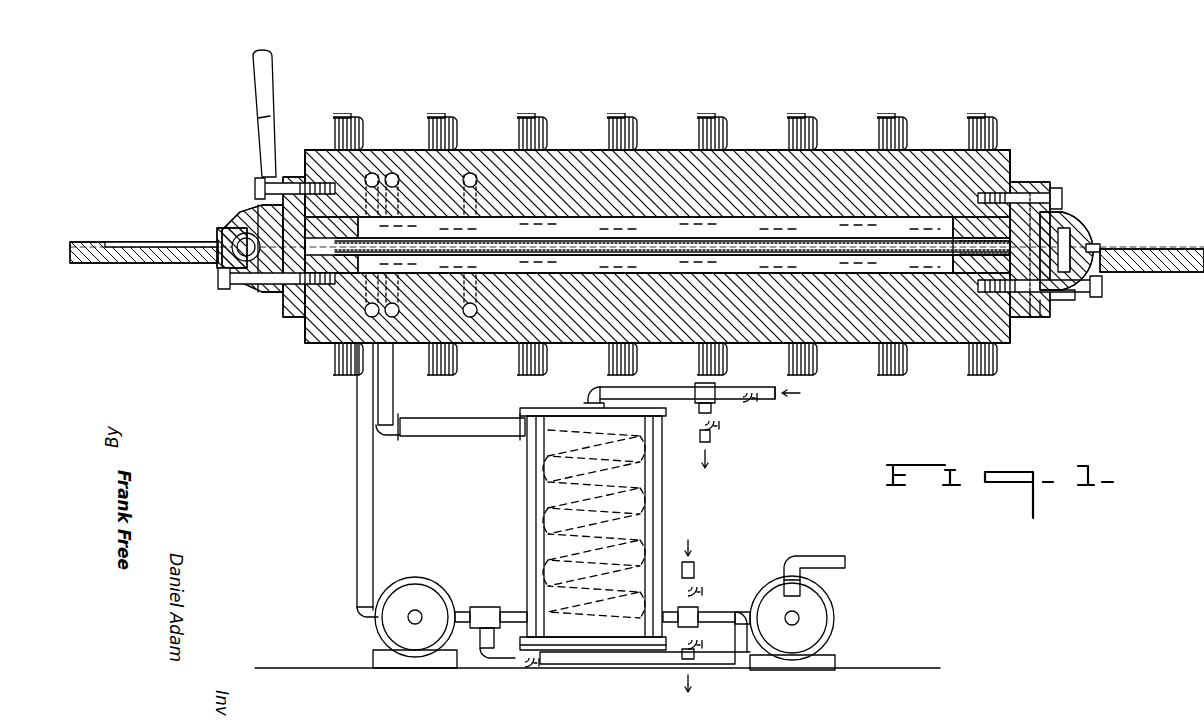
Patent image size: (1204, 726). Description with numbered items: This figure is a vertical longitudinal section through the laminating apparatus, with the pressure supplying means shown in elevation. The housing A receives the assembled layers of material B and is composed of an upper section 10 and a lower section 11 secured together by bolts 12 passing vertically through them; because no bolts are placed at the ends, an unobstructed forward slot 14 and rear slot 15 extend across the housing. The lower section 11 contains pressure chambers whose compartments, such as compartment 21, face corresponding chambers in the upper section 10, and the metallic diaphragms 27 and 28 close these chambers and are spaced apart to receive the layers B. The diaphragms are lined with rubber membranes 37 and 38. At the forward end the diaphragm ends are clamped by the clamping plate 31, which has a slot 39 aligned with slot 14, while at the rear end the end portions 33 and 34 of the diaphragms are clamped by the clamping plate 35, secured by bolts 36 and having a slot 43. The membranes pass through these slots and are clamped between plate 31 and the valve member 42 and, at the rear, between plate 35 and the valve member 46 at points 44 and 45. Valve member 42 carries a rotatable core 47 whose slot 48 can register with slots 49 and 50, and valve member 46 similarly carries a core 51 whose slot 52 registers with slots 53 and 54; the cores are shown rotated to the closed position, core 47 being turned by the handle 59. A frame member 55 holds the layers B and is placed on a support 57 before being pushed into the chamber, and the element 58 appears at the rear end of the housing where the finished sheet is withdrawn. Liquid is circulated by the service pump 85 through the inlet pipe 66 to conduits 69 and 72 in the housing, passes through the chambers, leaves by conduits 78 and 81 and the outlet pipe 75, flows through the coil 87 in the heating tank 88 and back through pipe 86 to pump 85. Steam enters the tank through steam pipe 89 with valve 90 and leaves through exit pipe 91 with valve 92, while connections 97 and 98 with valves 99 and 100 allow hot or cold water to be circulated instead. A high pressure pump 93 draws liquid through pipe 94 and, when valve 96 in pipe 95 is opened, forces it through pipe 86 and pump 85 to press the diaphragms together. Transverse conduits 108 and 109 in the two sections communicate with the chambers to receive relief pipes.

The housing or casing A is at (746, 142).
The layers of material to be joined B is at (108, 243).
The upper section 10 is at (560, 160).
The lower section 11 is at (585, 318).
The bolts 12 is at (972, 118).
The slot at forward end 14 is at (299, 269).
The slot at rear end 15 is at (955, 268).
The compartment 21 is at (735, 220).
The diaphragm 27 is at (625, 225).
The diaphragm 28 is at (862, 268).
The clamping plate 31 is at (268, 298).
The rear end portion of diaphragm 33 is at (1030, 190).
The rear end portion of diaphragm 34 is at (1030, 318).
The clamping plate 35 is at (1052, 192).
The bolts 36 is at (1040, 310).
The membrane 37 is at (800, 240).
The membrane 38 is at (652, 300).
The slot in clamping plate 39 is at (275, 292).
The valve member 42 is at (250, 270).
The slot in clamping plate 43 is at (1040, 218).
The clamped membrane portion 44 is at (1068, 228).
The clamped membrane portion 45 is at (1042, 318).
The valve member 46 is at (1094, 232).
The rotatable cylindrical core or valve element 47 is at (220, 280).
The slot in core 48 is at (255, 210).
The slot in valve member 49 is at (236, 235).
The slot in valve member 50 is at (294, 186).
The rotatable core or valve element 51 is at (1082, 232).
The slot in core 52 is at (1072, 296).
The slot in valve member 53 is at (1100, 248).
The slot in valve member 54 is at (1040, 295).
The frame member 55 is at (216, 242).
The table or support 57 is at (134, 264).
The rod end 58 is at (1158, 272).
The handle or lever 59 is at (256, 82).
The inlet pipe 66 is at (356, 468).
The conduit 69 is at (365, 315).
The conduit 72 is at (372, 174).
The outlet pipe 75 is at (450, 427).
The conduit 78 is at (394, 318).
The conduit 81 is at (392, 173).
The circulating or service pump 85 is at (420, 600).
The pipe 86 is at (480, 612).
The coil 87 is at (540, 468).
The heating tank 88 is at (652, 497).
The steam pipe 89 is at (772, 398).
The valve 90 is at (746, 383).
The exit pipe 91 is at (694, 680).
The valve 92 is at (700, 640).
The high pressure pump 93 is at (786, 596).
The pipe 94 is at (830, 556).
The pipe 95 is at (606, 665).
The valve 96 is at (525, 668).
The connection 97 is at (697, 565).
The connection 98 is at (712, 438).
The valve 99 is at (698, 585).
The valve 100 is at (696, 424).
The transverse conduit 108 is at (470, 173).
The transverse conduit 109 is at (470, 317).